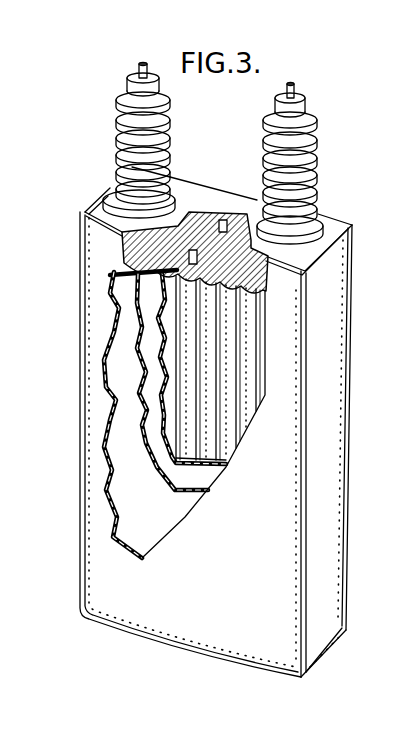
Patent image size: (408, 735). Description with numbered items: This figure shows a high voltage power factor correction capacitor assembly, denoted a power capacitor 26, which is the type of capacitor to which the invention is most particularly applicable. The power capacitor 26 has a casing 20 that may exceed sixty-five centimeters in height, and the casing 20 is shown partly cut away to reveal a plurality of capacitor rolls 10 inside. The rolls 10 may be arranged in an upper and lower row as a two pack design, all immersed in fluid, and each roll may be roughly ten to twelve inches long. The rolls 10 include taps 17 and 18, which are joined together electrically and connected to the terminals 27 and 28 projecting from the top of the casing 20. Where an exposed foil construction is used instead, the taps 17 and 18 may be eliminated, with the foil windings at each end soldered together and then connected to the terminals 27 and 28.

The rolls 10 is at (242, 398).
The tap 17 is at (190, 250).
The tap 18 is at (223, 220).
The casing 20 is at (137, 613).
The power capacitor 26 is at (352, 207).
The terminal 27 is at (118, 113).
The terminal 28 is at (318, 146).